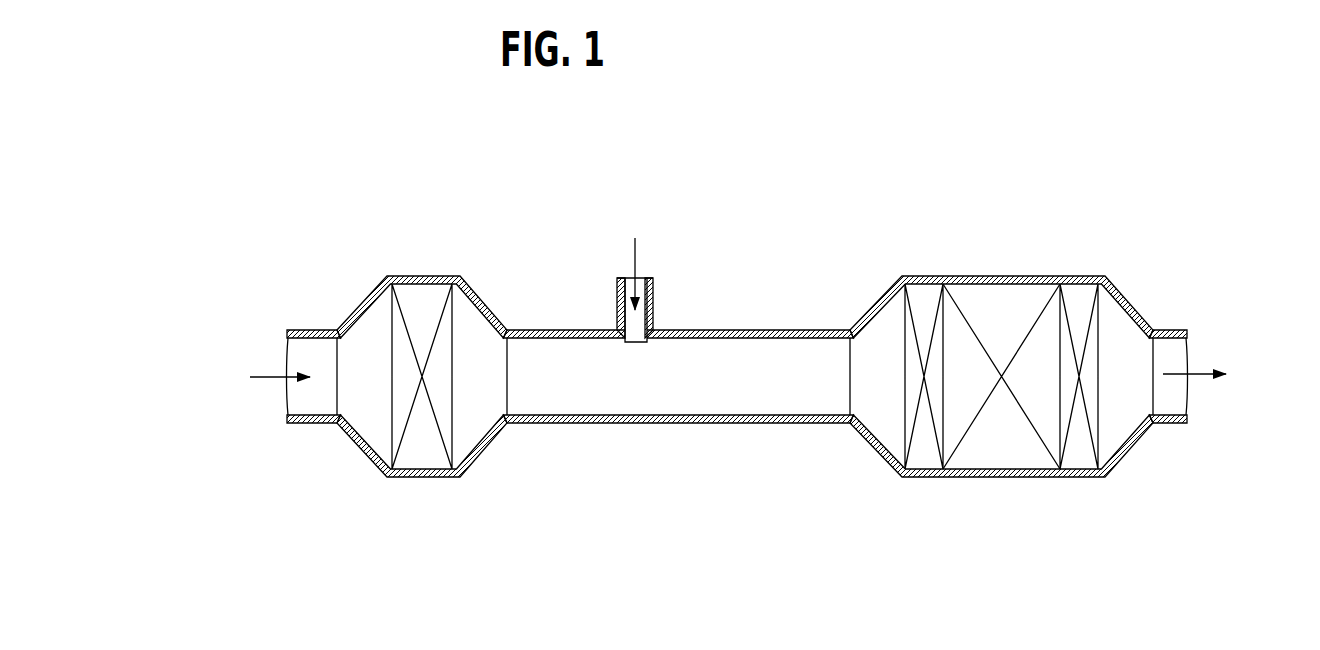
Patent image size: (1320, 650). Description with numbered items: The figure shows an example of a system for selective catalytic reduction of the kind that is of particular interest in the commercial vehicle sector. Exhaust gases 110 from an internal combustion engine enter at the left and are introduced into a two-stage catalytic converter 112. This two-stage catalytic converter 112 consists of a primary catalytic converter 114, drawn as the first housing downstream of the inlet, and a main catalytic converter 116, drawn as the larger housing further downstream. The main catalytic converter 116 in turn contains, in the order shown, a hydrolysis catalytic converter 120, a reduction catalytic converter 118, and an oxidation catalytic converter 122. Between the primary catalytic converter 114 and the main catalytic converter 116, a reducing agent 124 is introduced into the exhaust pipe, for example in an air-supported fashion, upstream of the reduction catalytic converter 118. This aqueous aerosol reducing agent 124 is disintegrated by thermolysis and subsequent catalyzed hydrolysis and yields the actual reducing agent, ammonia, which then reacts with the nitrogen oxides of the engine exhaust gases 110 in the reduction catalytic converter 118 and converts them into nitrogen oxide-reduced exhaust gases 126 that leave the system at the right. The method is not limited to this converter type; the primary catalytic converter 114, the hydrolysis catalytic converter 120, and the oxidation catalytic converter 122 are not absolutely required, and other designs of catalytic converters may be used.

The exhaust gases 110 is at (270, 374).
The two-stage catalytic converter 112 is at (838, 172).
The primary catalytic converter 114 is at (422, 457).
The main catalytic converter 116 is at (1013, 248).
The reduction catalytic converter 118 is at (1000, 453).
The hydrolysis catalytic converter 120 is at (922, 453).
The oxidation catalytic converter 122 is at (1078, 453).
The reducing agent 124 is at (638, 258).
The nitrogen oxide-reduced exhaust gases 126 is at (1207, 372).